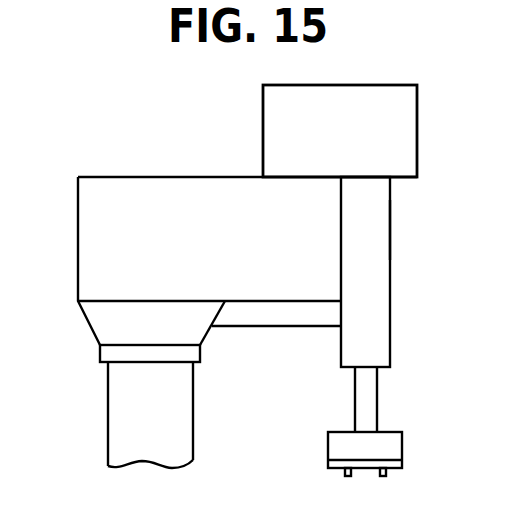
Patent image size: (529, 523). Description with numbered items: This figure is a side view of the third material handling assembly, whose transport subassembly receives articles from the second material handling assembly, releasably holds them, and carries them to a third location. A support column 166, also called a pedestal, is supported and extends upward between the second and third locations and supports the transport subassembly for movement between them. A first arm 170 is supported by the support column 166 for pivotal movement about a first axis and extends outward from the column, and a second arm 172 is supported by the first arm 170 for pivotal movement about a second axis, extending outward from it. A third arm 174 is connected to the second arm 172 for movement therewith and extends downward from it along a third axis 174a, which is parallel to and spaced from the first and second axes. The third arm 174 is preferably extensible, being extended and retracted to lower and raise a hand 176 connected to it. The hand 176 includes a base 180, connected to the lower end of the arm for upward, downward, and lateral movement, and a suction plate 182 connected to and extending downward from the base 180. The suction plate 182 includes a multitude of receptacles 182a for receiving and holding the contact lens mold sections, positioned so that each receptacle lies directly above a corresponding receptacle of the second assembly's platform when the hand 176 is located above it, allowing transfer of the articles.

The support column 166 is at (122, 405).
The first arm 170 is at (138, 177).
The second arm 172 is at (358, 98).
The third arm 174 is at (382, 214).
The third axis 174a is at (375, 252).
The hand 176 is at (342, 426).
The base 180 is at (333, 442).
The suction plate 182 is at (405, 466).
The receptacles 182a is at (346, 477).